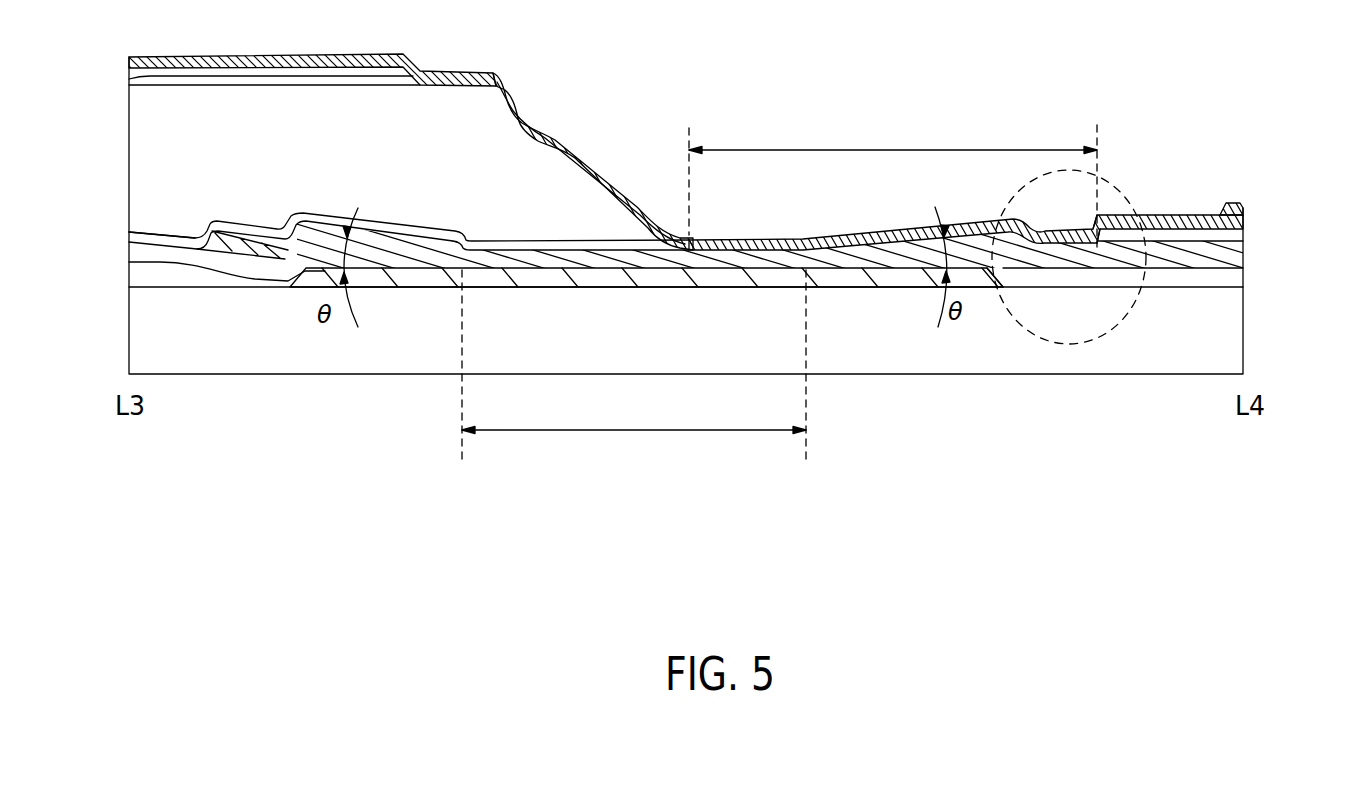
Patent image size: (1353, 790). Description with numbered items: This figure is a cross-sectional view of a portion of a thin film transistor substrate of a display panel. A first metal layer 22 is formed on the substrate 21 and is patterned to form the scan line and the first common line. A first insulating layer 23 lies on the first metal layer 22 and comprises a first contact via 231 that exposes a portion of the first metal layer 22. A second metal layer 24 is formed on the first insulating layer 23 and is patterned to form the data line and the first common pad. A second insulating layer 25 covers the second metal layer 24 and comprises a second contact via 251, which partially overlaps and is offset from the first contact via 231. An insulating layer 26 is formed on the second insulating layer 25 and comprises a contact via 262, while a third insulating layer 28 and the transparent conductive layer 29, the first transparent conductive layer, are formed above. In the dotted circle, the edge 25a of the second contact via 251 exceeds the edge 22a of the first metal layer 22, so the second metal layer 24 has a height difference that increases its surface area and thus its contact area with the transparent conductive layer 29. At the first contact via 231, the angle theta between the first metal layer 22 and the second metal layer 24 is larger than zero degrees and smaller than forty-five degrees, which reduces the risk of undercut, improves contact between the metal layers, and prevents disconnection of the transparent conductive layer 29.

The substrate 21 is at (1233, 343).
The first metal layer 22 is at (129, 263).
The edge of the first metal layer 22a is at (1003, 284).
The first insulating layer 23 is at (1235, 277).
The second metal layer 24 is at (1233, 250).
The second insulating layer 25 is at (1237, 232).
The edge of the second contact via 25a is at (1096, 233).
The insulating layer 26 is at (152, 167).
The contact via 262 is at (590, 165).
The third insulating layer 28 is at (152, 75).
The transparent conductive layer 29 is at (1247, 211).
The first contact via 231 is at (634, 368).
The second contact via 251 is at (893, 182).